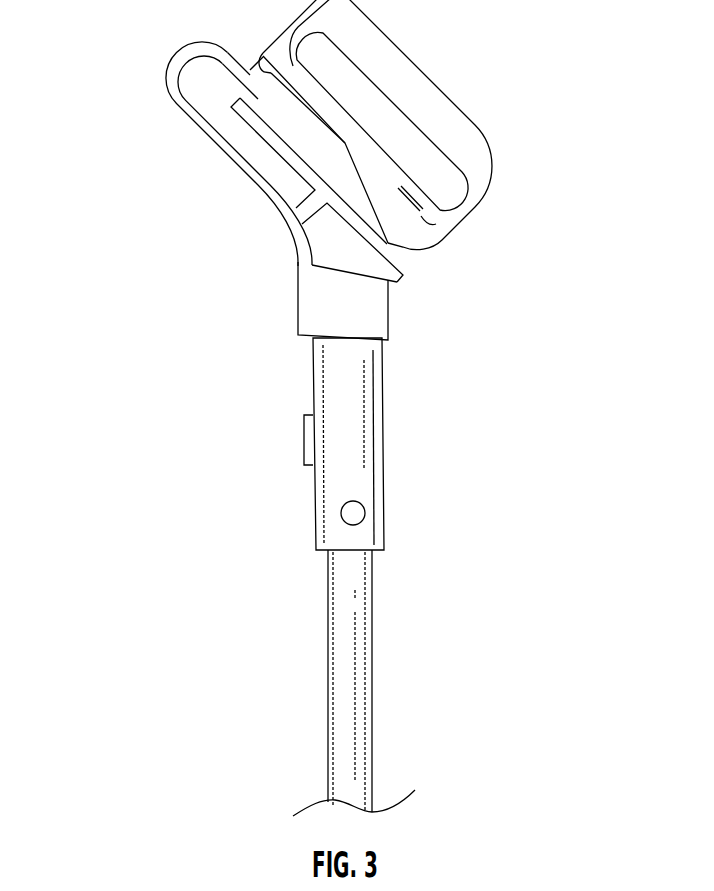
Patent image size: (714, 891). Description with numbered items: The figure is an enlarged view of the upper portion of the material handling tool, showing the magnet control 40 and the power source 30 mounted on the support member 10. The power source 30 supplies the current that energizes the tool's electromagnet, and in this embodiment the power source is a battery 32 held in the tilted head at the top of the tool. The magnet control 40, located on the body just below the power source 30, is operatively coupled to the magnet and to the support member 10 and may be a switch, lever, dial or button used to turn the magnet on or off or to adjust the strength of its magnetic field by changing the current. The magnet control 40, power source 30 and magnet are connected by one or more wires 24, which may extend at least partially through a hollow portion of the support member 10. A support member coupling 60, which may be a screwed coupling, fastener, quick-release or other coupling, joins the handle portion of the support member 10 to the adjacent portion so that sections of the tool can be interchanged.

The support member 10 is at (352, 688).
The wires 24 is at (203, 135).
The power source 30 is at (420, 46).
The battery 32 is at (478, 205).
The magnet control 40 is at (342, 418).
The support member coupling 60 is at (362, 516).